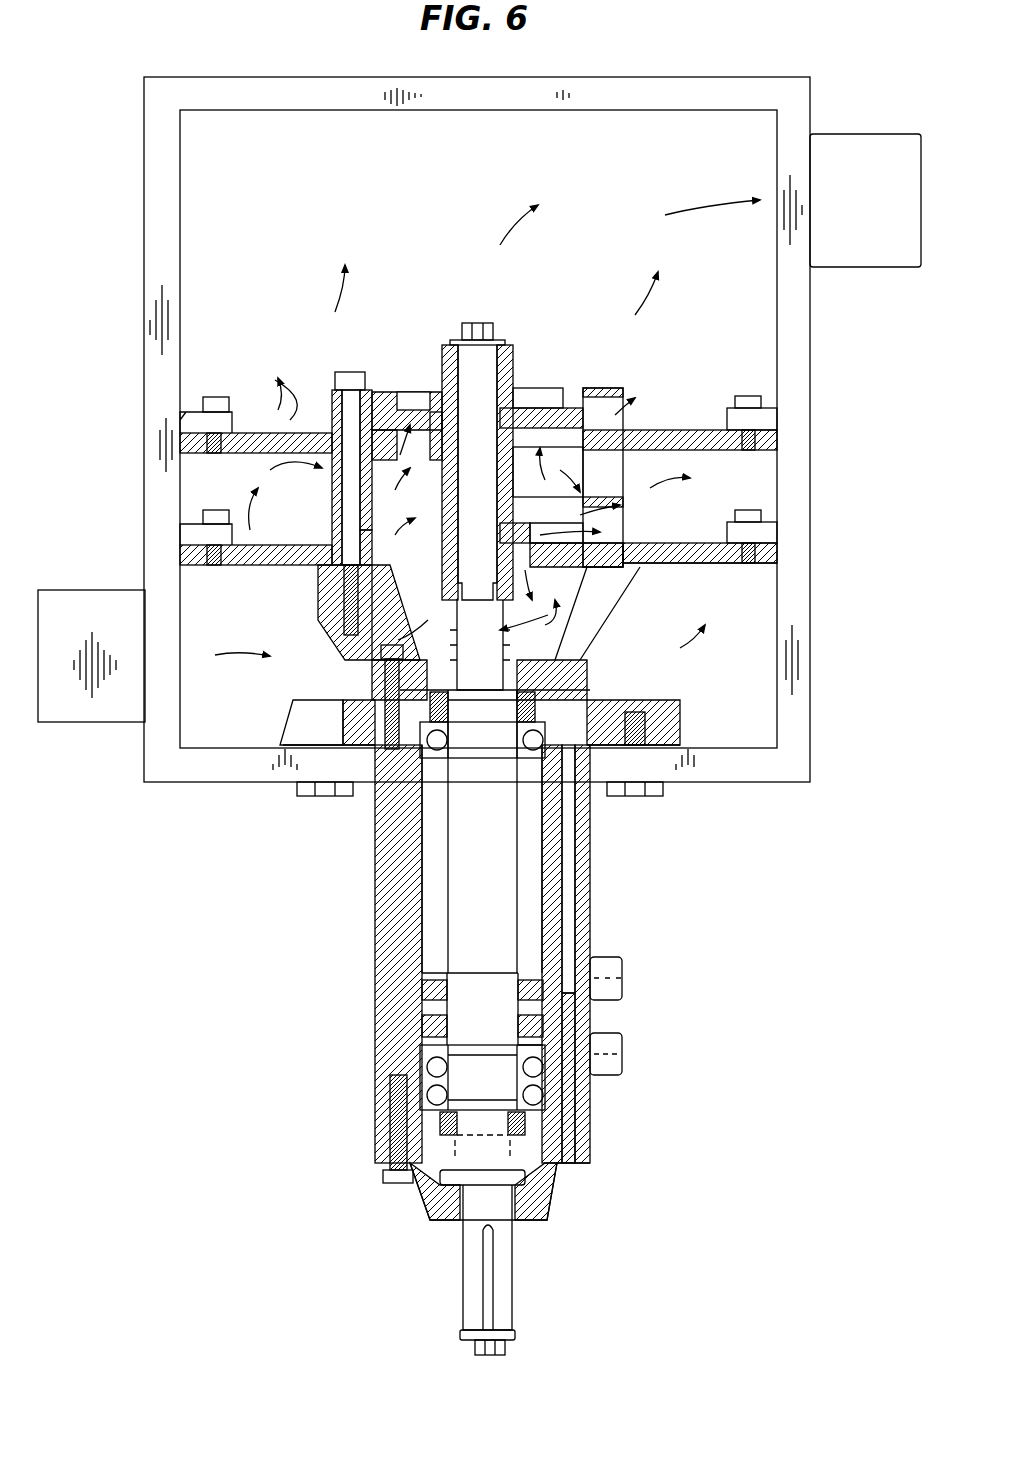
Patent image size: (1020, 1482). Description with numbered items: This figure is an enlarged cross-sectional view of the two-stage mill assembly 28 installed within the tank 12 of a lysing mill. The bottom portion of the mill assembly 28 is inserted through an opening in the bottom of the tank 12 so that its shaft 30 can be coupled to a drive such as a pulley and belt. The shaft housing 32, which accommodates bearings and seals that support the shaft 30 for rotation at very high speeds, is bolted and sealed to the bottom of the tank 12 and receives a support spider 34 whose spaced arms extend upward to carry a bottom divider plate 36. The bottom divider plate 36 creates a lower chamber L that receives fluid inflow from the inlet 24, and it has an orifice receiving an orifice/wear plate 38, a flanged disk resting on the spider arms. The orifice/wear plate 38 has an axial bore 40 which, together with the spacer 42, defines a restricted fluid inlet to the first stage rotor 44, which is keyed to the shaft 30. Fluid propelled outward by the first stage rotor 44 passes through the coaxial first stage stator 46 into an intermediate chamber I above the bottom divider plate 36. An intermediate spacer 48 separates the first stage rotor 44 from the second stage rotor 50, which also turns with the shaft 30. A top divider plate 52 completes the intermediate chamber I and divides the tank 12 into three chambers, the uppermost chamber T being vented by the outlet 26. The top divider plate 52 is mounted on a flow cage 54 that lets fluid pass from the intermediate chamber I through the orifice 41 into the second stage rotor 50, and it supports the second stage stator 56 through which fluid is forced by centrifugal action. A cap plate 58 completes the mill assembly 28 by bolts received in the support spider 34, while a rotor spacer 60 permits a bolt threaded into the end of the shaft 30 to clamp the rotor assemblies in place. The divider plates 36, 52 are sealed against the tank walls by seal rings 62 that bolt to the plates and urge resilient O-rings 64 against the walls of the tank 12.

The tank 12 is at (145, 248).
The uppermost chamber T is at (765, 130).
The intermediate chamber I is at (765, 480).
The lower chamber L is at (752, 722).
The inlet 24 is at (100, 722).
The outlet 26 is at (866, 258).
The two-stage mill assembly 28 is at (612, 884).
The shaft 30 is at (455, 907).
The shaft housing 32 is at (385, 990).
The support spider 34 is at (325, 598).
The bottom divider plate 36 is at (720, 565).
The orifice/wear plate 38 is at (590, 567).
The axial bore 40 is at (437, 563).
The orifice 41 is at (338, 390).
The spacer 42 is at (490, 573).
The first stage rotor 44 is at (365, 540).
The first stage stator 46 is at (600, 540).
The intermediate spacer 48 is at (510, 435).
The second stage rotor 50 is at (432, 420).
The top divider plate 52 is at (770, 440).
The flow cage 54 is at (330, 480).
The second stage stator 56 is at (332, 430).
The cap plate 58 is at (610, 392).
The rotor spacer 60 is at (462, 345).
The seal ring 62 is at (765, 522).
The O-ring 64 is at (775, 542).